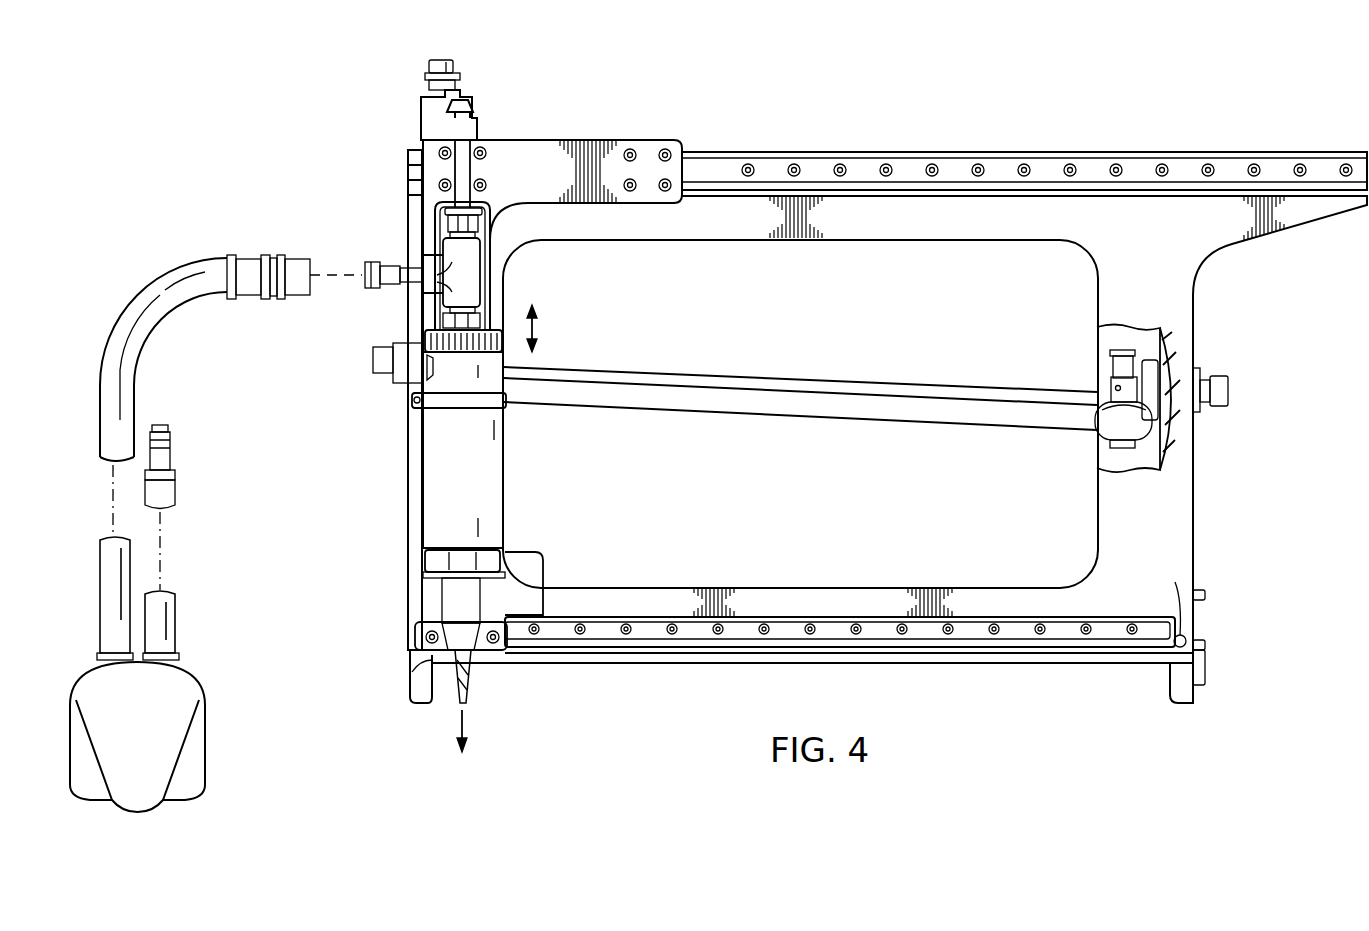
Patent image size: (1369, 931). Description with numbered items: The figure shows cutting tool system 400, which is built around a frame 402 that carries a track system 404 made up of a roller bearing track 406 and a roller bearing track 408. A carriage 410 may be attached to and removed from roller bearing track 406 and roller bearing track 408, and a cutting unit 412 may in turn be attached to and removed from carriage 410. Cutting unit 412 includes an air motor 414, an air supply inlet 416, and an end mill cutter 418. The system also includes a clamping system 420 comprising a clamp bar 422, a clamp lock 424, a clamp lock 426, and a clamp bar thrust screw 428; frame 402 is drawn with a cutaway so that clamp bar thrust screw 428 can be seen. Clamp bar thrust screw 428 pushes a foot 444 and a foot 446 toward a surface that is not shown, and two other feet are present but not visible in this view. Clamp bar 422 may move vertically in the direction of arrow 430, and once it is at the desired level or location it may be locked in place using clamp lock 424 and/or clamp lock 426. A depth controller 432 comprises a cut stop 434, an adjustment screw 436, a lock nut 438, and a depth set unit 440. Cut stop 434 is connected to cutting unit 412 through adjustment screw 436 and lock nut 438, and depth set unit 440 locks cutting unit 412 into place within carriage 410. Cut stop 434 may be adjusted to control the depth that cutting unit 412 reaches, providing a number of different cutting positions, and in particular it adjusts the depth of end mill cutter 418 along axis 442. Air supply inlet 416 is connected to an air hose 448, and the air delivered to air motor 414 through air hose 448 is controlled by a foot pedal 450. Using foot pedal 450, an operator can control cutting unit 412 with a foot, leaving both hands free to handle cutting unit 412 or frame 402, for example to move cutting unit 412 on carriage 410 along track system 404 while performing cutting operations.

The cutting tool system 400 is at (1200, 55).
The frame 402 is at (1222, 150).
The track system 404 is at (1270, 280).
The roller bearing track 406 is at (1315, 150).
The roller bearing track 408 is at (1060, 643).
The carriage 410 is at (498, 236).
The cutting unit 412 is at (507, 507).
The air motor 414 is at (477, 492).
The air supply inlet 416 is at (375, 292).
The end mill cutter 418 is at (470, 680).
The clamping system 420 is at (820, 376).
The clamp bar 422 is at (908, 383).
The clamp lock 424 is at (372, 362).
The clamp lock 426 is at (1232, 392).
The clamp bar thrust screw 428 is at (1110, 356).
The arrow 430 is at (537, 328).
The depth controller 432 is at (488, 120).
The cut stop 434 is at (425, 76).
The adjustment screw 436 is at (472, 175).
The lock nut 438 is at (447, 227).
The depth set unit 440 is at (506, 386).
The axis 442 is at (468, 718).
The foot 444 is at (423, 703).
The foot 446 is at (1207, 672).
The air hose 448 is at (125, 308).
The foot pedal 450 is at (207, 737).